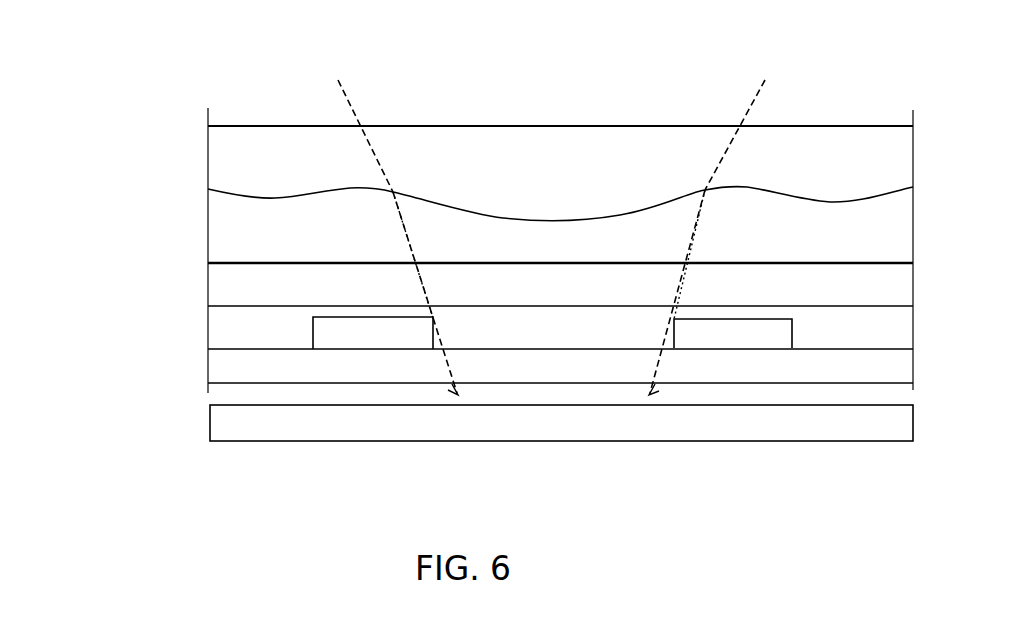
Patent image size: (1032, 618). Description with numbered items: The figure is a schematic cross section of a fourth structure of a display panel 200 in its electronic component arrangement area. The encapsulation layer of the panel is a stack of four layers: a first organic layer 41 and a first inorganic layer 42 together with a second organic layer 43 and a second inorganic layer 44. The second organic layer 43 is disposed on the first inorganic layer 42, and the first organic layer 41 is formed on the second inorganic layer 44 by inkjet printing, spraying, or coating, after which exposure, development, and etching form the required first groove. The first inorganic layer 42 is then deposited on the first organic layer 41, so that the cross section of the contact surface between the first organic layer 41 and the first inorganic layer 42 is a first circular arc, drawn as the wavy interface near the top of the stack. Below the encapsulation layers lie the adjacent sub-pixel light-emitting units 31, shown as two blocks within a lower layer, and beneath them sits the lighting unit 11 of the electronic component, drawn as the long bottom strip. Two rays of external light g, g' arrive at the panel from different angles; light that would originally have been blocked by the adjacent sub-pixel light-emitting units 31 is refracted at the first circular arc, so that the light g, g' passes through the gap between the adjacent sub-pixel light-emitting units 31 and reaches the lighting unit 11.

The display device 200 is at (163, 57).
The first inorganic layer 42 is at (242, 156).
The first organic layer 41 is at (242, 220).
The second inorganic layer 44 is at (240, 285).
The second organic layer 43 is at (243, 328).
The sub-pixel light-emitting unit 31 is at (370, 332).
The lighting unit 11 is at (247, 427).
The light g is at (390, 220).
The light g' is at (721, 221).